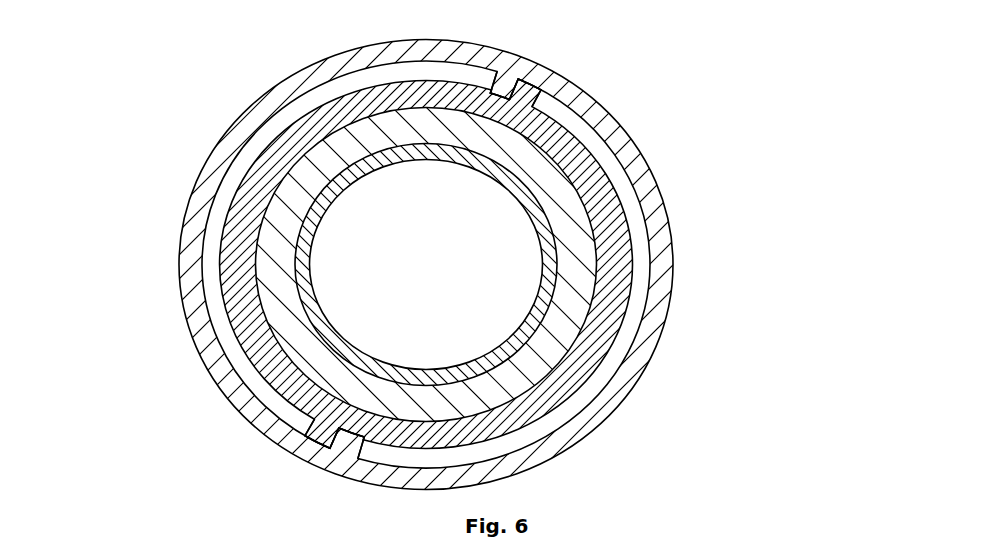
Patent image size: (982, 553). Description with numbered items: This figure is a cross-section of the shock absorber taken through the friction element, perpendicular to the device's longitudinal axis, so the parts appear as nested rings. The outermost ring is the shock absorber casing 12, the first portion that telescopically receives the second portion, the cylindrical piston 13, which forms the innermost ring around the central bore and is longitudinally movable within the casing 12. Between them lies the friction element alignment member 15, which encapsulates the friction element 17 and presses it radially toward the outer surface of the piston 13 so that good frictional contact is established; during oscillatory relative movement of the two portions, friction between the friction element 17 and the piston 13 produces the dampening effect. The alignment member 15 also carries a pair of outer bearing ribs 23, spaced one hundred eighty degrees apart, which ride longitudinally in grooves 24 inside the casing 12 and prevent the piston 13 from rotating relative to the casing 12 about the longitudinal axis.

The shock absorber casing 12 is at (607, 403).
The piston 13 is at (545, 300).
The friction element alignment member 15 is at (592, 182).
The friction element 17 is at (580, 261).
The outer bearing ribs 23 is at (530, 98).
The grooves 24 is at (298, 422).